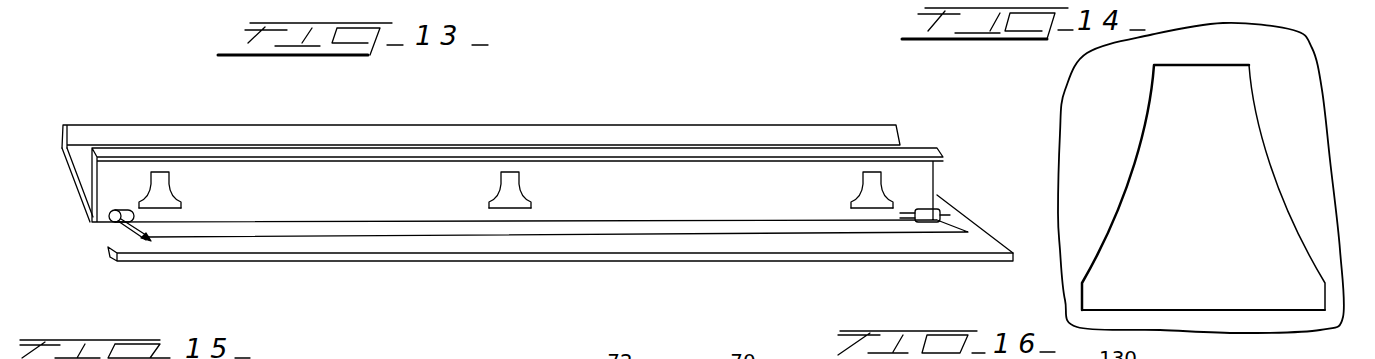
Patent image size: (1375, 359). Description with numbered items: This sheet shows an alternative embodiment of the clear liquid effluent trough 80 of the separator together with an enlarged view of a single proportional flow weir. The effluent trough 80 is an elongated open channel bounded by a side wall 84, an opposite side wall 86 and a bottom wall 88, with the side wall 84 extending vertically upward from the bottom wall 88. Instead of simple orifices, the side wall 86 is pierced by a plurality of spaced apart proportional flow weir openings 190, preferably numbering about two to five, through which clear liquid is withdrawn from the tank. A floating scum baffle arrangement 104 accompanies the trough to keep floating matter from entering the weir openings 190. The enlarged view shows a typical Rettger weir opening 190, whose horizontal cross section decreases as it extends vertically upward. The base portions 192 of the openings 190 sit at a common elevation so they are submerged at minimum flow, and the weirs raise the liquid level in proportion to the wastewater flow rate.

In FIG. 13, the effluent trough 80 is at (717, 125).
In FIG. 13, the side wall 84 is at (100, 142).
In FIG. 13, the side wall 86 is at (114, 186).
In FIG. 14, the side wall 86 is at (1297, 75).
In FIG. 13, the bottom wall 88 is at (88, 172).
In FIG. 13, the floating scum baffle arrangement 104 is at (668, 254).
In FIG. 13, the proportional flow weir opening 190 is at (158, 182).
In FIG. 14, the proportional flow weir opening 190 is at (1257, 127).
In FIG. 13, the base portion 192 is at (160, 210).
In FIG. 14, the base portion 192 is at (1270, 310).